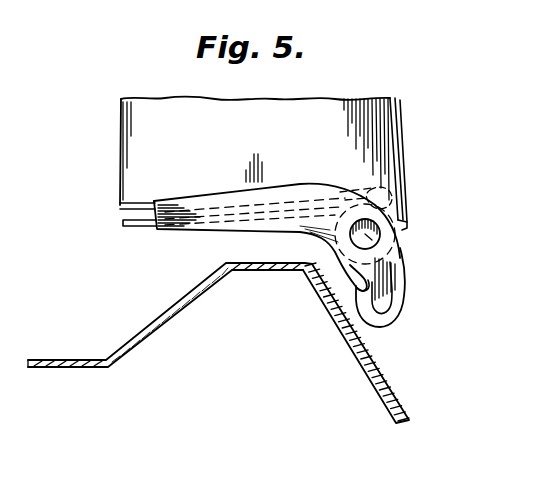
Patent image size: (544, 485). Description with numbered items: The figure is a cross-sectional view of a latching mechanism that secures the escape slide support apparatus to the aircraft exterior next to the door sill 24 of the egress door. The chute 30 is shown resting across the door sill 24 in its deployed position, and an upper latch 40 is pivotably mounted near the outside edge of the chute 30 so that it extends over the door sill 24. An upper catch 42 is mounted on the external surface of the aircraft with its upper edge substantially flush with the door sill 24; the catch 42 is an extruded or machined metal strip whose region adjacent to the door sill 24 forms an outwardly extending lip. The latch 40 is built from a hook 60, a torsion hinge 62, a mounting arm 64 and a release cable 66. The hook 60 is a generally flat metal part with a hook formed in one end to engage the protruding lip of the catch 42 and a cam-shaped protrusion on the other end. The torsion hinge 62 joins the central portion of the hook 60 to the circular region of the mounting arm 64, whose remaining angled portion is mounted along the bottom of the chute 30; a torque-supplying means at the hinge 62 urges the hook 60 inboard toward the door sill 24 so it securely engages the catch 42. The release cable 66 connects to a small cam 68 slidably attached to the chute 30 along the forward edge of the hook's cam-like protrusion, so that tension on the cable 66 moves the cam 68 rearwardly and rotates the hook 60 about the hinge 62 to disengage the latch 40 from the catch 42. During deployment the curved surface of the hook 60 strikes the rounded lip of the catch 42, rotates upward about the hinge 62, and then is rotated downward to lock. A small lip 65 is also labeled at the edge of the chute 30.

The door sill 24 is at (275, 271).
The chute 30 is at (378, 122).
The upper latch 40 is at (398, 241).
The upper catch 42 is at (380, 368).
The hook 60 is at (392, 302).
The torsion hinge 62 is at (378, 277).
The mounting arm 64 is at (207, 237).
The lip / edge 65 is at (402, 224).
The release cable 66 is at (137, 228).
The cam 68 is at (393, 183).